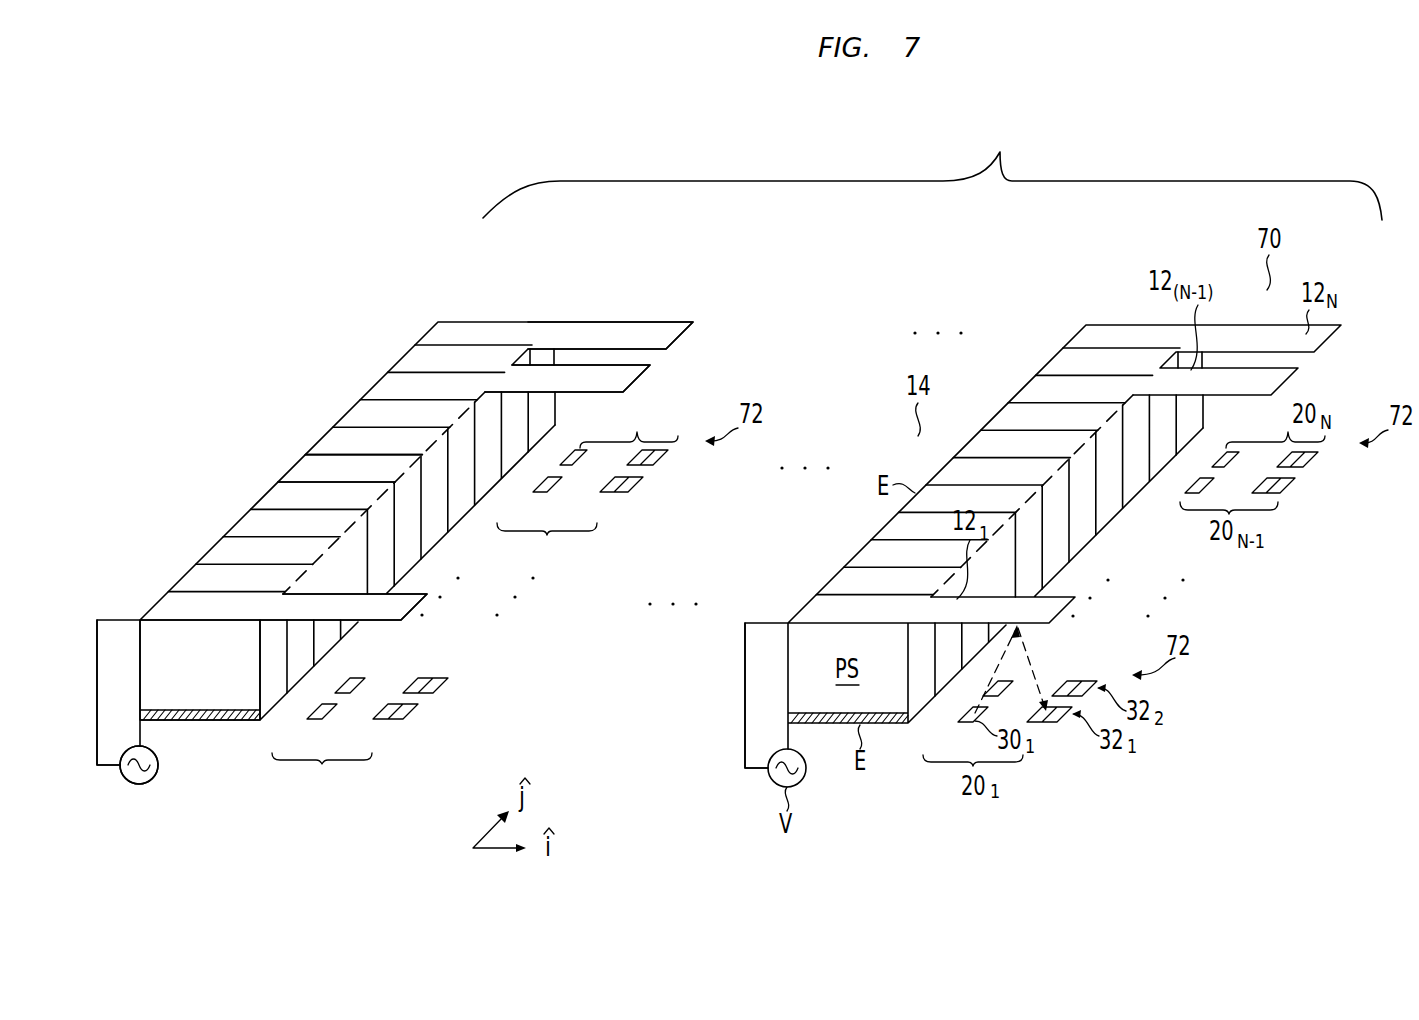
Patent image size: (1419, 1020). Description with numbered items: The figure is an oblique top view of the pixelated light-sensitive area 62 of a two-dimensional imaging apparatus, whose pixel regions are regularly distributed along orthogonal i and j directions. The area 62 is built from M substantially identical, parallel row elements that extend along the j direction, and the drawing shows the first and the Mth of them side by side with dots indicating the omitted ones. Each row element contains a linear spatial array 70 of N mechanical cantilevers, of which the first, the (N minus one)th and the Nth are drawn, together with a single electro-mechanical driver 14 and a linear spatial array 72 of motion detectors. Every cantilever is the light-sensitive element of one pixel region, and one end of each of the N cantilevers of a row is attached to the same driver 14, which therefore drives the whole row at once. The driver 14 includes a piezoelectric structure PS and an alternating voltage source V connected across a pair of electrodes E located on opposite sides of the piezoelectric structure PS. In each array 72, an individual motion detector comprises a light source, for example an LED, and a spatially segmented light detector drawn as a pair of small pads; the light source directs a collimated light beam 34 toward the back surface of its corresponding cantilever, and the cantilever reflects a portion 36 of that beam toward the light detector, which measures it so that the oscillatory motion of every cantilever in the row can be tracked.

The electro-mechanical driver 14 is at (268, 436).
The linear spatial array of mechanical cantilevers 70 is at (616, 290).
The electrodes E is at (265, 493).
The piezoelectric structure PS is at (210, 682).
The alternating voltage source V is at (139, 784).
The linear spatial array of motion detectors 72 is at (486, 675).
The pixelated light-sensitive area 62 is at (932, 169).
The collimated light beam 34 is at (1007, 659).
The reflected portion of the collimated light beam 36 is at (1040, 676).